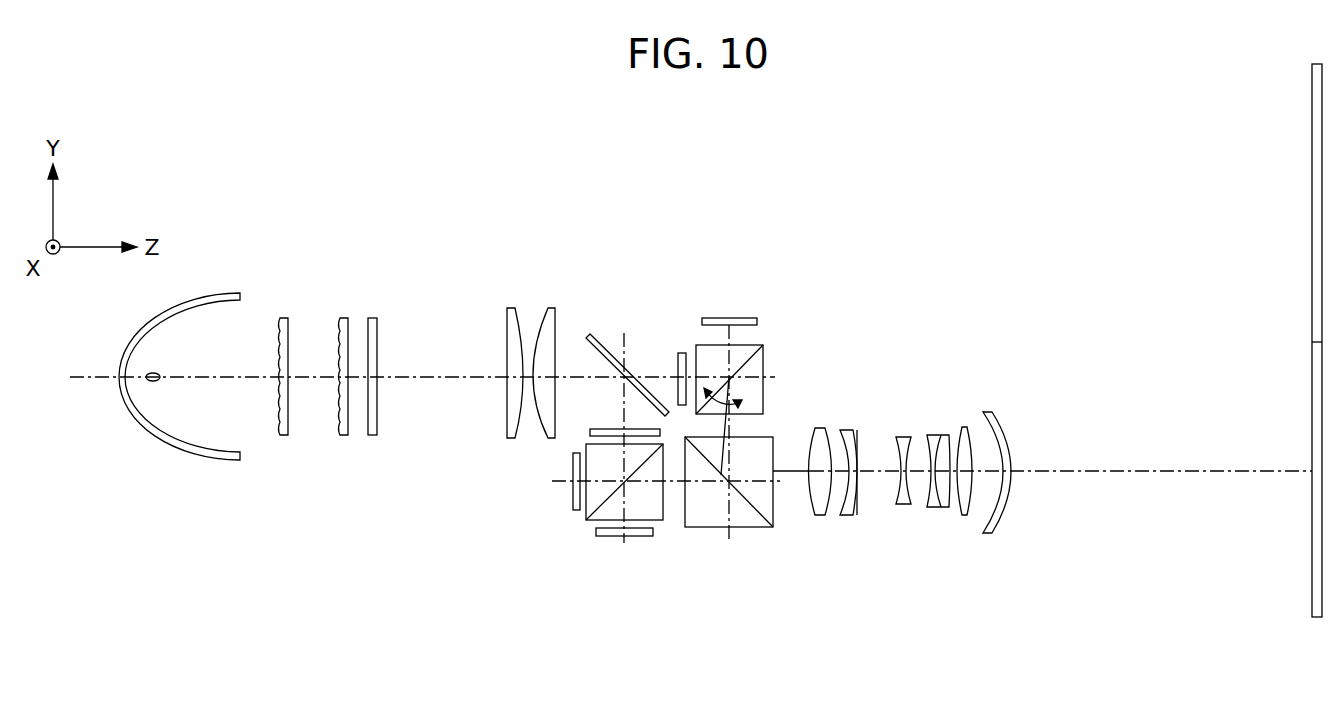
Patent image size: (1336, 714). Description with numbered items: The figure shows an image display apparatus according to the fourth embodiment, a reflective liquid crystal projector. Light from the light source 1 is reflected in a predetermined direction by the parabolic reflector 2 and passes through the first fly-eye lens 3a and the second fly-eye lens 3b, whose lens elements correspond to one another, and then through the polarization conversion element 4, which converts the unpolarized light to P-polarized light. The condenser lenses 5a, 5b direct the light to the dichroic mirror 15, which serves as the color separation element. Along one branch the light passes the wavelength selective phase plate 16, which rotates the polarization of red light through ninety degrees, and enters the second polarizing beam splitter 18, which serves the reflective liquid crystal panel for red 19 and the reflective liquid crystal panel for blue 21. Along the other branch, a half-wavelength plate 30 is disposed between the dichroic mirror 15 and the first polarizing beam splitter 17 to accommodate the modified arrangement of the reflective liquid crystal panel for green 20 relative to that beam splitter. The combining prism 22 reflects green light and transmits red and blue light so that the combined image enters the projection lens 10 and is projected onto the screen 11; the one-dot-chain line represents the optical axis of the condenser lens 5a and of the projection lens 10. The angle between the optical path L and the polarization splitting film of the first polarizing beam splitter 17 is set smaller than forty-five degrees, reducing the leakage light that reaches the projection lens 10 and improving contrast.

The light source 1 is at (155, 373).
The reflector 2 is at (151, 433).
The first fly-eye lens 3a is at (281, 437).
The second fly-eye lens 3b is at (340, 437).
The polarization conversion element 4 is at (371, 437).
The condenser lens 5a is at (508, 308).
The condenser lens 5b is at (553, 308).
The dichroic mirror 15 is at (588, 333).
The wavelength selective phase plate 16 is at (587, 441).
The first polarizing beam splitter 17 is at (755, 345).
The second polarizing beam splitter 18 is at (585, 521).
The reflective liquid crystal panel for red 19 is at (572, 502).
The reflective liquid crystal panel for green 20 is at (740, 318).
The reflective liquid crystal panel for blue 21 is at (633, 542).
The combining prism 22 is at (739, 528).
The half-wavelength plate 30 is at (678, 352).
The projection lens 10 is at (793, 527).
The screen 11 is at (1313, 260).
The optical path L is at (752, 470).